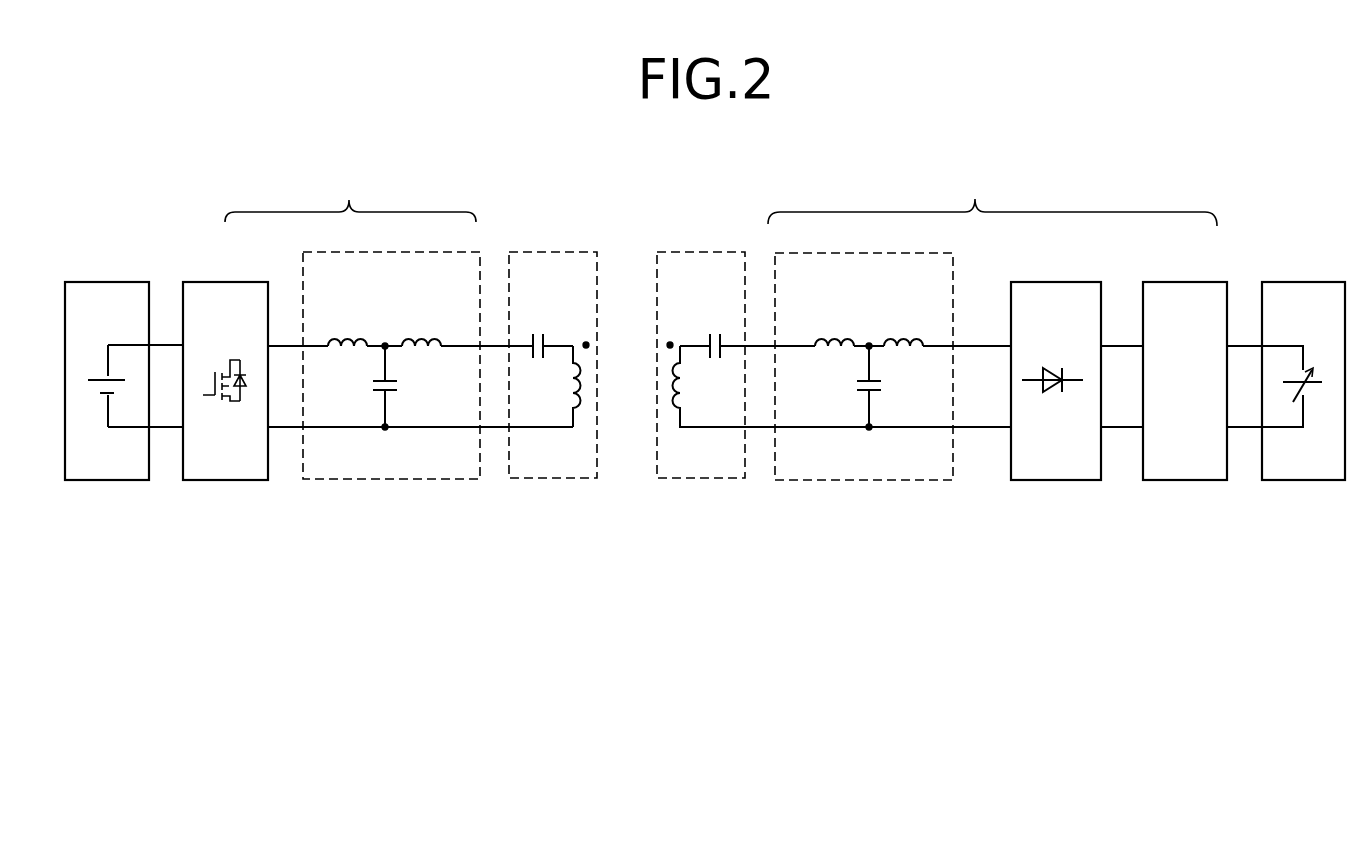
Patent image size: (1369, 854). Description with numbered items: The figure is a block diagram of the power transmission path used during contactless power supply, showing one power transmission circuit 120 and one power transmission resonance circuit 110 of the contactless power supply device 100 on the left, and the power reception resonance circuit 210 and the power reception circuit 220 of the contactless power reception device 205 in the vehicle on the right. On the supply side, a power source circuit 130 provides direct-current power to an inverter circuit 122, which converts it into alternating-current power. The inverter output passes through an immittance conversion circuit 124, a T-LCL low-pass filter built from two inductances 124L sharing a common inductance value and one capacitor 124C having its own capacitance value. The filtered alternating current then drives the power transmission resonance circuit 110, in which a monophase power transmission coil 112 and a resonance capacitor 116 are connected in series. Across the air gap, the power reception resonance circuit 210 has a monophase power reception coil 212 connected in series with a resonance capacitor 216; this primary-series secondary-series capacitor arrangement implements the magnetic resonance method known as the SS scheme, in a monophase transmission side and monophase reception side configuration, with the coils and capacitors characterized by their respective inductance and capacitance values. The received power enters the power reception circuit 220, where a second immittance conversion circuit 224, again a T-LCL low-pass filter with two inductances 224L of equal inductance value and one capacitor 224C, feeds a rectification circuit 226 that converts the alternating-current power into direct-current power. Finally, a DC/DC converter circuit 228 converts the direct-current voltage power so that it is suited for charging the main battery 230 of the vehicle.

The contactless power supply device 100 is at (131, 168).
The contactless power reception device 205 is at (1189, 168).
The power transmission circuit 120 is at (350, 194).
The power reception circuit 220 is at (992, 196).
The power source circuit 130 is at (108, 282).
The inverter circuit 122 is at (228, 282).
The immittance conversion circuit 124 is at (400, 252).
The inductances 124L is at (414, 329).
The capacitor 124C is at (378, 377).
The power transmission resonance circuit 110 is at (558, 252).
The resonance capacitor 116 is at (548, 338).
The power transmission coil 112 is at (583, 411).
The power reception resonance circuit 210 is at (709, 252).
The resonance capacitor 216 is at (710, 338).
The power reception coil 212 is at (671, 411).
The immittance conversion circuit 224 is at (862, 252).
The inductances 224L is at (892, 330).
The capacitor 224C is at (877, 378).
The rectification circuit 226 is at (1055, 282).
The DC/DC converter circuit 228 is at (1190, 282).
The main battery 230 is at (1305, 282).